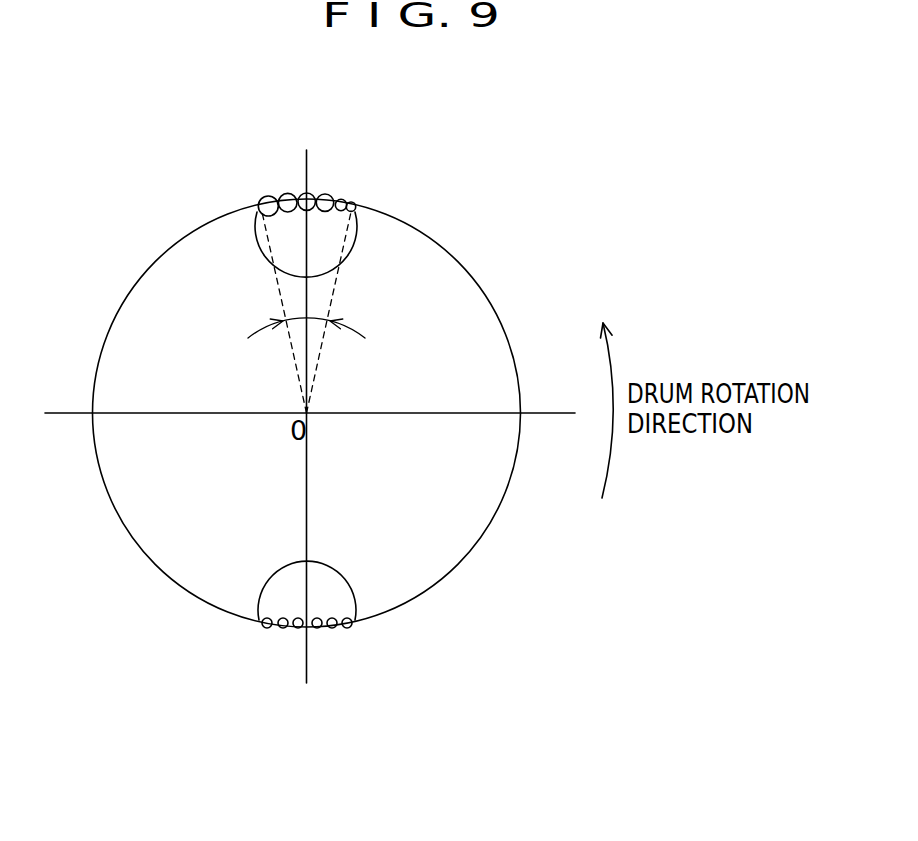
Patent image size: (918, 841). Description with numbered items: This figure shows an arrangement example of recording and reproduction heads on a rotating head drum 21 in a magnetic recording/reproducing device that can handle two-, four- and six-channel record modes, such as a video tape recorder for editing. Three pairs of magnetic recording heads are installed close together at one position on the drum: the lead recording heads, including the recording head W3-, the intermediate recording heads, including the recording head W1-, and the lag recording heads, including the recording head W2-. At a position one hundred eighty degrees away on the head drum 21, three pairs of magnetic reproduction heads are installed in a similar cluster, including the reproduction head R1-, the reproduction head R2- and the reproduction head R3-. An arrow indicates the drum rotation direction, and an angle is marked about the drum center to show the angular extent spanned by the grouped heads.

The head drum 21 is at (470, 278).
The recording head W1- is at (298, 192).
The recording head W2- is at (356, 205).
The recording head W3- is at (280, 194).
The reproduction head R1- is at (335, 628).
The reproduction head R2- is at (297, 628).
The reproduction head R3- is at (263, 625).